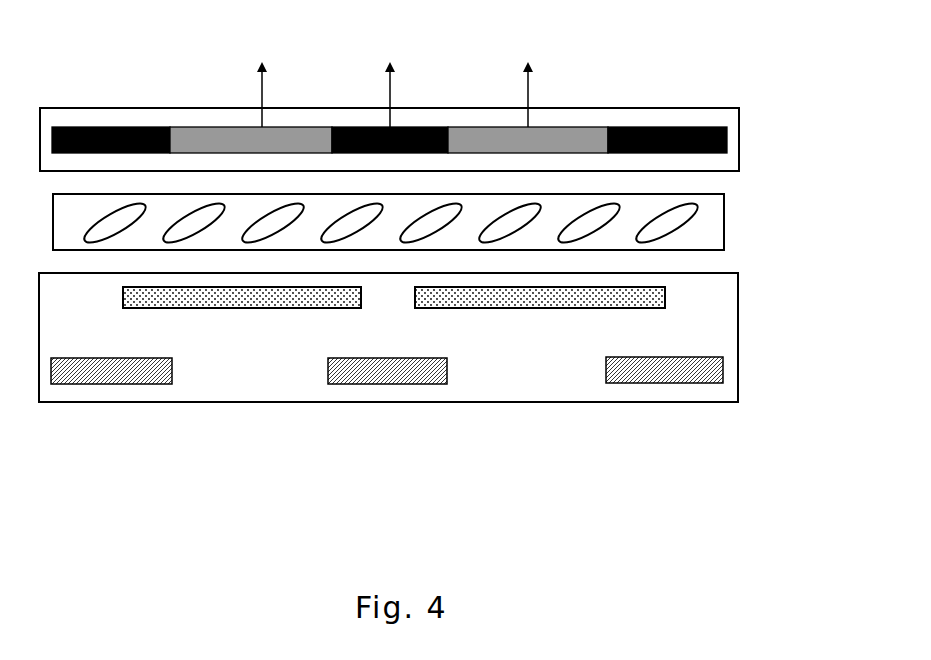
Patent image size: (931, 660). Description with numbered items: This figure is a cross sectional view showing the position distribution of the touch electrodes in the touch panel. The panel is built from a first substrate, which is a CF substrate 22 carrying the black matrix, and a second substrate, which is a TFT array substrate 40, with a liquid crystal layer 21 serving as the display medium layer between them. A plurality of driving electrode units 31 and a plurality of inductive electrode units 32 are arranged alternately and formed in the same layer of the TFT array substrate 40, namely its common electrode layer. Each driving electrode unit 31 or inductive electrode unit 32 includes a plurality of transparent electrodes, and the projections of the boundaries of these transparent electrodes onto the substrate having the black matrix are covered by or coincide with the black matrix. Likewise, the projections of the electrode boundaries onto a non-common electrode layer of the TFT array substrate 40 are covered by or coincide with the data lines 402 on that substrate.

The CF substrate 22 is at (739, 137).
The liquid crystal layer 21 is at (692, 217).
The TFT array substrate 40 is at (725, 402).
The data lines 402 is at (690, 367).
The inductive electrode units 32 is at (207, 308).
The driving electrode units 31 is at (569, 308).